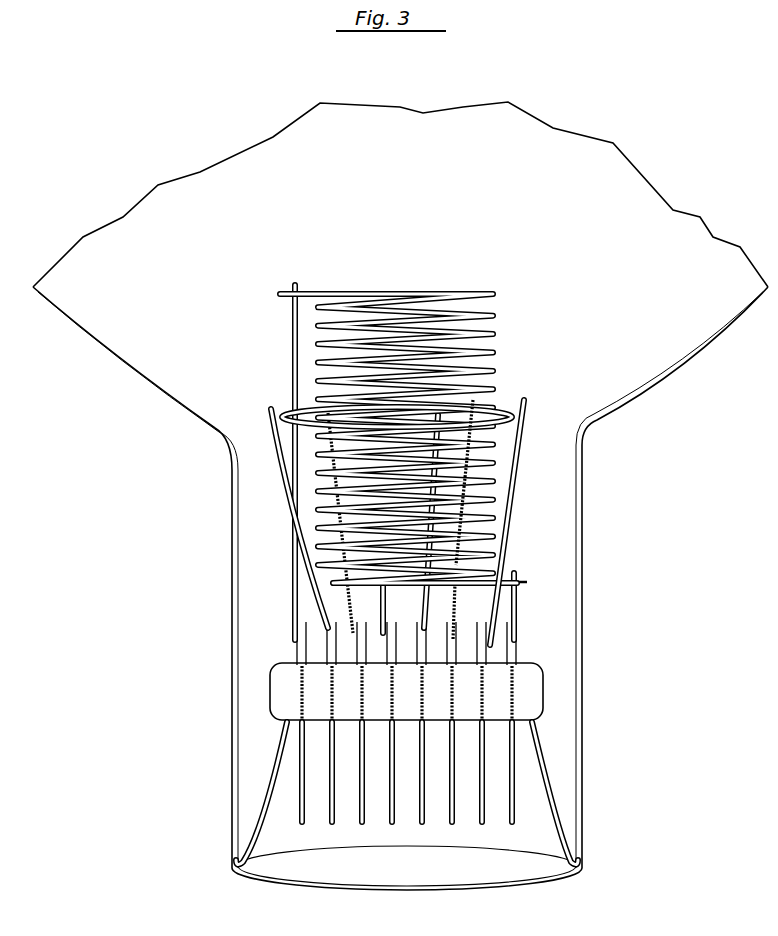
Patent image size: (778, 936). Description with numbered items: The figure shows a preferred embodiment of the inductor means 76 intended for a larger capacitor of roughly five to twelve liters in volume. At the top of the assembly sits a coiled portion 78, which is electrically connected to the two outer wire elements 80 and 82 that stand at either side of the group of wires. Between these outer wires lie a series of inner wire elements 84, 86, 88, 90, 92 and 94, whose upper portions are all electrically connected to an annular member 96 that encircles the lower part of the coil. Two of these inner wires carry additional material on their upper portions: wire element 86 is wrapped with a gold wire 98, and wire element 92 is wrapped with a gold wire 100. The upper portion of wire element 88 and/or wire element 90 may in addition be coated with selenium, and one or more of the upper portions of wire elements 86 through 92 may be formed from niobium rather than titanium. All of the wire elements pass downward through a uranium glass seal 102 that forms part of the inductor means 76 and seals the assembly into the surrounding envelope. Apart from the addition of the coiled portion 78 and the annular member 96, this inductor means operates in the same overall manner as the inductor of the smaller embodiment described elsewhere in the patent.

The inductor means 76 is at (600, 640).
The coiled portion 78 is at (504, 349).
The outer wire element 80 is at (297, 650).
The outer wire element 82 is at (514, 638).
The wire element 84 is at (354, 637).
The wire element 86 is at (385, 636).
The wire element 88 is at (390, 645).
The wire element 90 is at (421, 636).
The wire element 92 is at (456, 645).
The wire element 94 is at (486, 652).
The annular member 96 is at (505, 411).
The gold wire 98 is at (318, 498).
The gold wire 100 is at (470, 452).
The uranium glass seal 102 is at (548, 766).